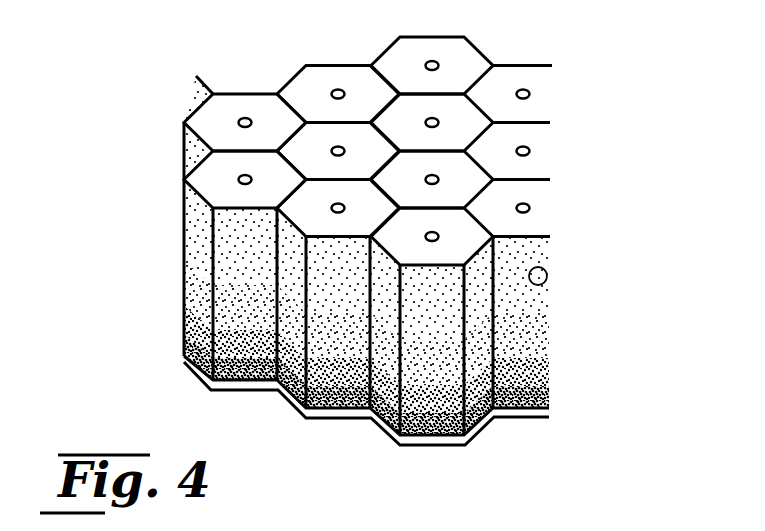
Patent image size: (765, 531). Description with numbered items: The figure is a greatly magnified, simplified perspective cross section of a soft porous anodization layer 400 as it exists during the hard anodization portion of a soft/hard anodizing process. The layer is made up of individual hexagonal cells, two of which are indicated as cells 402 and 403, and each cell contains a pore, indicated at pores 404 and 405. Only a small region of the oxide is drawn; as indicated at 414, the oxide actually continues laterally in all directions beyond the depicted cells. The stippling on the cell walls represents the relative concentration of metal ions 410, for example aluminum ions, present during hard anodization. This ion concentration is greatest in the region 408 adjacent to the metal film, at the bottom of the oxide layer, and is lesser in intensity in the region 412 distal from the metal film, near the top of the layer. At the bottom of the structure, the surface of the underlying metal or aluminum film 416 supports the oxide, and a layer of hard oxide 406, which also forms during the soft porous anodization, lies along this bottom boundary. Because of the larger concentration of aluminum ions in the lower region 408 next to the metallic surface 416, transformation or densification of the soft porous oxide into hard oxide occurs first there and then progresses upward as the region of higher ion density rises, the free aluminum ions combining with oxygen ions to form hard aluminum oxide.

The soft porous anodization layer 400 is at (365, 50).
The cell 402 is at (457, 121).
The cell 403 is at (219, 124).
The pore 404 is at (441, 63).
The pore 405 is at (247, 117).
The layer of hard oxide 406 is at (560, 412).
The metal film adjacent region 408 is at (178, 302).
The relative concentration of metal ions 410 is at (547, 272).
The metal film distal region 412 is at (178, 183).
The lateral continuation of the oxide 414 is at (607, 233).
The surface of the underlying metal film 416 is at (437, 446).